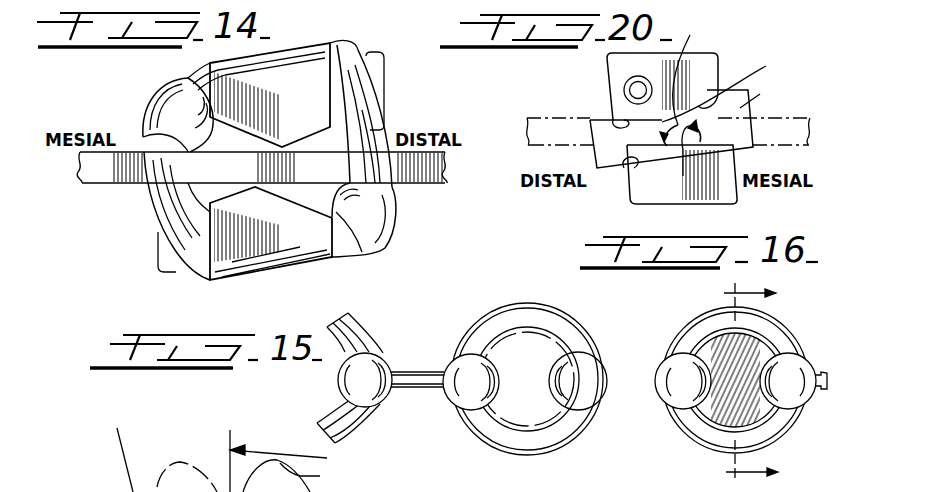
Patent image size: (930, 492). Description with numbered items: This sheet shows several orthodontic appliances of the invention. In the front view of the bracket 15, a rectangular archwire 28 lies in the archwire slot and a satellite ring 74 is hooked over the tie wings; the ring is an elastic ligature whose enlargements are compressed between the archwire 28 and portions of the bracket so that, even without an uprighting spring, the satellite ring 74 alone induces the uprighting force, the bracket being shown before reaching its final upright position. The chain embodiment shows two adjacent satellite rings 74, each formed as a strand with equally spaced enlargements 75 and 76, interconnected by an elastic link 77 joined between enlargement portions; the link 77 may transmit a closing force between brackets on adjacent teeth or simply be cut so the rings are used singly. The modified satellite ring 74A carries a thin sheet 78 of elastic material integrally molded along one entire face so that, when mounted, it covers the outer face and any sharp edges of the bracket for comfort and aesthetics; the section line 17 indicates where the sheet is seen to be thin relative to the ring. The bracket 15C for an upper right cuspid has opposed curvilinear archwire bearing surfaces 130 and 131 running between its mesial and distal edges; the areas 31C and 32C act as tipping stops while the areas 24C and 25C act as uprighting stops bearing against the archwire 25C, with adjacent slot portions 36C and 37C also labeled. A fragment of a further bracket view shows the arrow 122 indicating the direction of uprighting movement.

In FIG. 14, the bracket 15 is at (288, 141).
In FIG. 14, the rectangular archwire 28 is at (434, 178).
In FIG. 14, the satellite ring 74 is at (382, 101).
In FIG. 15, the satellite ring 74 is at (471, 346).
In FIG. 16, the modified satellite ring 74A is at (741, 373).
In FIG. 15, the enlargement 75 is at (461, 400).
In FIG. 15, the enlargement 76 is at (373, 370).
In FIG. 15, the link 77 is at (407, 389).
In FIG. 16, the sheet 78 is at (762, 414).
In FIG. 16, the section line 17 is at (797, 283).
In FIG. 20, the bracket 15C is at (656, 109).
In FIG. 20, the uprighting stop 24C is at (620, 118).
In FIG. 20, the uprighting stop 25C is at (713, 150).
In FIG. 20, the tipping stop 31C is at (732, 86).
In FIG. 20, the slot surface 37C is at (740, 108).
In FIG. 20, the tie wing hook 36C is at (602, 138).
In FIG. 20, the tipping stop 32C is at (628, 172).
In FIG. 20, the curvilinear archwire bearing surface 130 is at (691, 75).
In FIG. 20, the curvilinear archwire bearing surface 131 is at (684, 157).
In FIG. 15, the arrow 122 is at (235, 460).